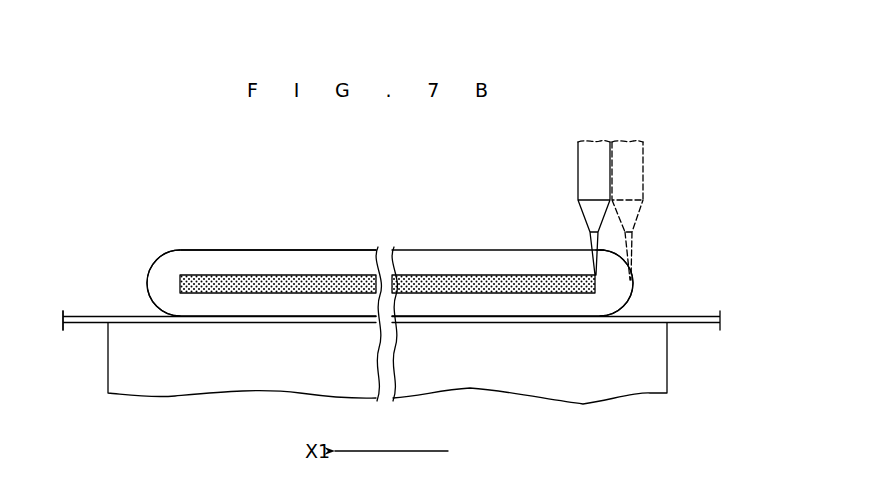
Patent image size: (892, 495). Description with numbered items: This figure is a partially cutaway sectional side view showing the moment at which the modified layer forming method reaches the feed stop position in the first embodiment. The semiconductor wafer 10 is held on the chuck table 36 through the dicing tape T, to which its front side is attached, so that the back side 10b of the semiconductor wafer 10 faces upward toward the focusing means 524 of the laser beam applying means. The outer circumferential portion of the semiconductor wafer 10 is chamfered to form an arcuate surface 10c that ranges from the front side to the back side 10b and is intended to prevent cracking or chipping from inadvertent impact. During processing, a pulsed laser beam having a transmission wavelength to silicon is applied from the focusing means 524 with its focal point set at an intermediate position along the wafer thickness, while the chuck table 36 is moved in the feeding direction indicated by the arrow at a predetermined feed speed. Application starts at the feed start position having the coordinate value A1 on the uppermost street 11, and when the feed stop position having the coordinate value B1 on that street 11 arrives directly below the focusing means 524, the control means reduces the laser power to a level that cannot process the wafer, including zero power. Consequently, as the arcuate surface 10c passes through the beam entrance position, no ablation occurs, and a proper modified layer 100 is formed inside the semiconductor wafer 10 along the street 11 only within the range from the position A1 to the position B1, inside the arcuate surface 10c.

The semiconductor wafer 10 is at (474, 247).
The back side 10b is at (305, 249).
The arcuate surface 10c is at (632, 285).
The modified layer 100 is at (222, 284).
The street 11 is at (647, 305).
The chuck table 36 is at (651, 365).
The focusing means 524 is at (588, 168).
The feed start position A1 is at (183, 248).
The feed stop position B1 is at (596, 249).
The dicing tape T is at (83, 325).